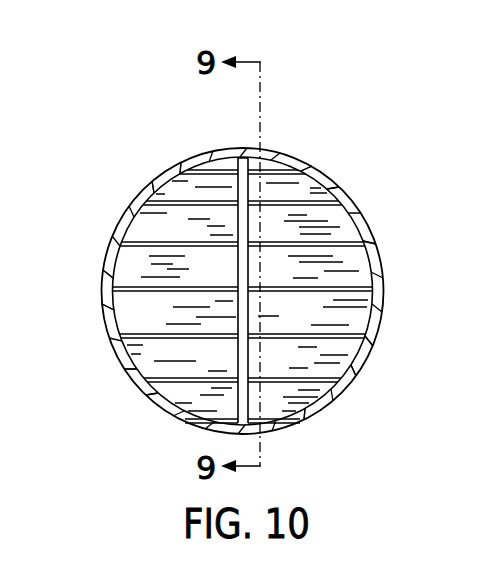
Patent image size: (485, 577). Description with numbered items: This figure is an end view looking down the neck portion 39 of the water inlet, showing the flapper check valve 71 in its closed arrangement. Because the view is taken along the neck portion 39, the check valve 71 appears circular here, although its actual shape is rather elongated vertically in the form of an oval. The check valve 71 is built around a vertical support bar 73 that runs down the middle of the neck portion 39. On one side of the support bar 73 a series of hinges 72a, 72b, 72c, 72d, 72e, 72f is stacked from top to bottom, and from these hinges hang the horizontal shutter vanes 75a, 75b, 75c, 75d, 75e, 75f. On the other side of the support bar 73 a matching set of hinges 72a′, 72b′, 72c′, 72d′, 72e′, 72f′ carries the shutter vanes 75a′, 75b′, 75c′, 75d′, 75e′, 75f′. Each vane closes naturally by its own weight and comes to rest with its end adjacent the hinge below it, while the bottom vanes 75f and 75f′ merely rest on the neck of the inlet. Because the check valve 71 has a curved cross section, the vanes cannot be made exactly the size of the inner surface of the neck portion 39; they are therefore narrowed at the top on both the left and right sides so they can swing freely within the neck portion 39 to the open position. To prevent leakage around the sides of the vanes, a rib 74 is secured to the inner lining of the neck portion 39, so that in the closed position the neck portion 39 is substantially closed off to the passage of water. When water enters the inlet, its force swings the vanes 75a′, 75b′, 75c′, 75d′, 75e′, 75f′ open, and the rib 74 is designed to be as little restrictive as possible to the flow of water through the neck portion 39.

The neck portion 39 is at (385, 280).
The check valve 71 is at (166, 176).
The vertical support bar 73 is at (246, 152).
The rib 74 is at (356, 218).
The hinge 72a is at (193, 171).
The hinge 72a′ is at (272, 165).
The hinge 72b is at (170, 205).
The hinge 72b′ is at (281, 199).
The hinge 72c is at (158, 245).
The hinge 72c′ is at (287, 245).
The hinge 72d is at (154, 292).
The hinge 72d′ is at (283, 292).
The hinge 72e is at (148, 338).
The hinge 72e′ is at (262, 338).
The hinge 72f is at (172, 388).
The hinge 72f′ is at (278, 395).
The shutter vane 75a is at (199, 182).
The shutter vane 75a′ is at (290, 177).
The shutter vane 75b is at (142, 197).
The shutter vane 75b′ is at (338, 203).
The shutter vane 75c is at (116, 258).
The shutter vane 75c′ is at (370, 257).
The shutter vane 75d is at (118, 319).
The shutter vane 75d′ is at (368, 328).
The shutter vane 75e is at (128, 358).
The shutter vane 75e′ is at (355, 368).
The bottom vane 75f is at (158, 393).
The bottom vane 75f′ is at (318, 402).